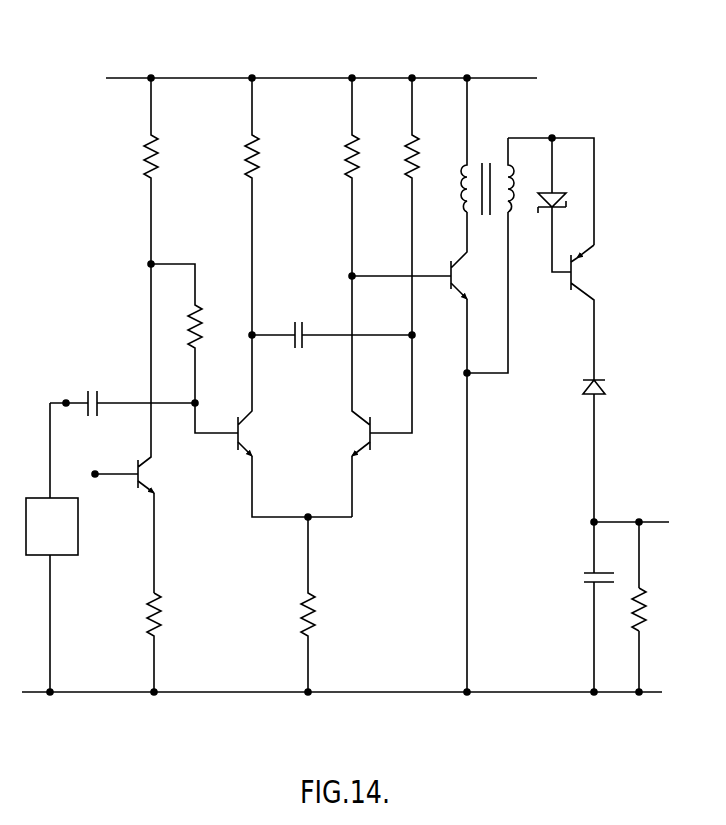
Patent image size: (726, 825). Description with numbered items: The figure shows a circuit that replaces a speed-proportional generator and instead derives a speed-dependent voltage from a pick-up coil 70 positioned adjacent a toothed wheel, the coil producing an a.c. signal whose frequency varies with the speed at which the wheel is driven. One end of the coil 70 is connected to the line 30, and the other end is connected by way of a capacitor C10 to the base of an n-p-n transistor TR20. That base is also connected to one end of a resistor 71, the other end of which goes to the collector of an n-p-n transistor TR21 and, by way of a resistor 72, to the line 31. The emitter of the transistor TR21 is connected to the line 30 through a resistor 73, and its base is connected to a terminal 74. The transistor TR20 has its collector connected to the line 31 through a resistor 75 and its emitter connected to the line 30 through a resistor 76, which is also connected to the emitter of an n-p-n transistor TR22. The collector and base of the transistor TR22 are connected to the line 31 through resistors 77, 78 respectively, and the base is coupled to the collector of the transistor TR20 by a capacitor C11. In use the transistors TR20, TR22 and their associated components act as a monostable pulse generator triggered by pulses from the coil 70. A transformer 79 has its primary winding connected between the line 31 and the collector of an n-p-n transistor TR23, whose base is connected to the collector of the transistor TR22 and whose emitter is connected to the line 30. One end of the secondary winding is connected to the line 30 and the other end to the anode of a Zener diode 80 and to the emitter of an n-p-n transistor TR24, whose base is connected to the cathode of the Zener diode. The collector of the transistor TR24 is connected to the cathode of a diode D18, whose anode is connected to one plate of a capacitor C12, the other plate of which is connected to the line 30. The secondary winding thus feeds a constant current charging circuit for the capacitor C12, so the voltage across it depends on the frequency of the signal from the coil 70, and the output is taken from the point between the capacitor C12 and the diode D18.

The line 31 is at (215, 78).
The line 30 is at (97, 693).
The resistor 72 is at (140, 165).
The resistor 75 is at (242, 165).
The resistor 77 is at (342, 165).
The resistor 78 is at (402, 165).
The resistor 71 is at (203, 325).
The capacitor C10 is at (120, 384).
The capacitor C11 is at (305, 346).
The capacitor C12 is at (590, 586).
The terminal 74 is at (92, 476).
The pick-up coil 70 is at (73, 521).
The resistor 73 is at (166, 617).
The resistor 76 is at (317, 616).
The n-p-n transistor TR20 is at (244, 438).
The n-p-n transistor TR21 is at (148, 472).
The n-p-n transistor TR22 is at (363, 429).
The n-p-n transistor TR23 is at (447, 265).
The n-p-n transistor TR24 is at (578, 271).
The transformer 79 is at (474, 207).
The Zener diode 80 is at (557, 192).
The diode D18 is at (608, 383).